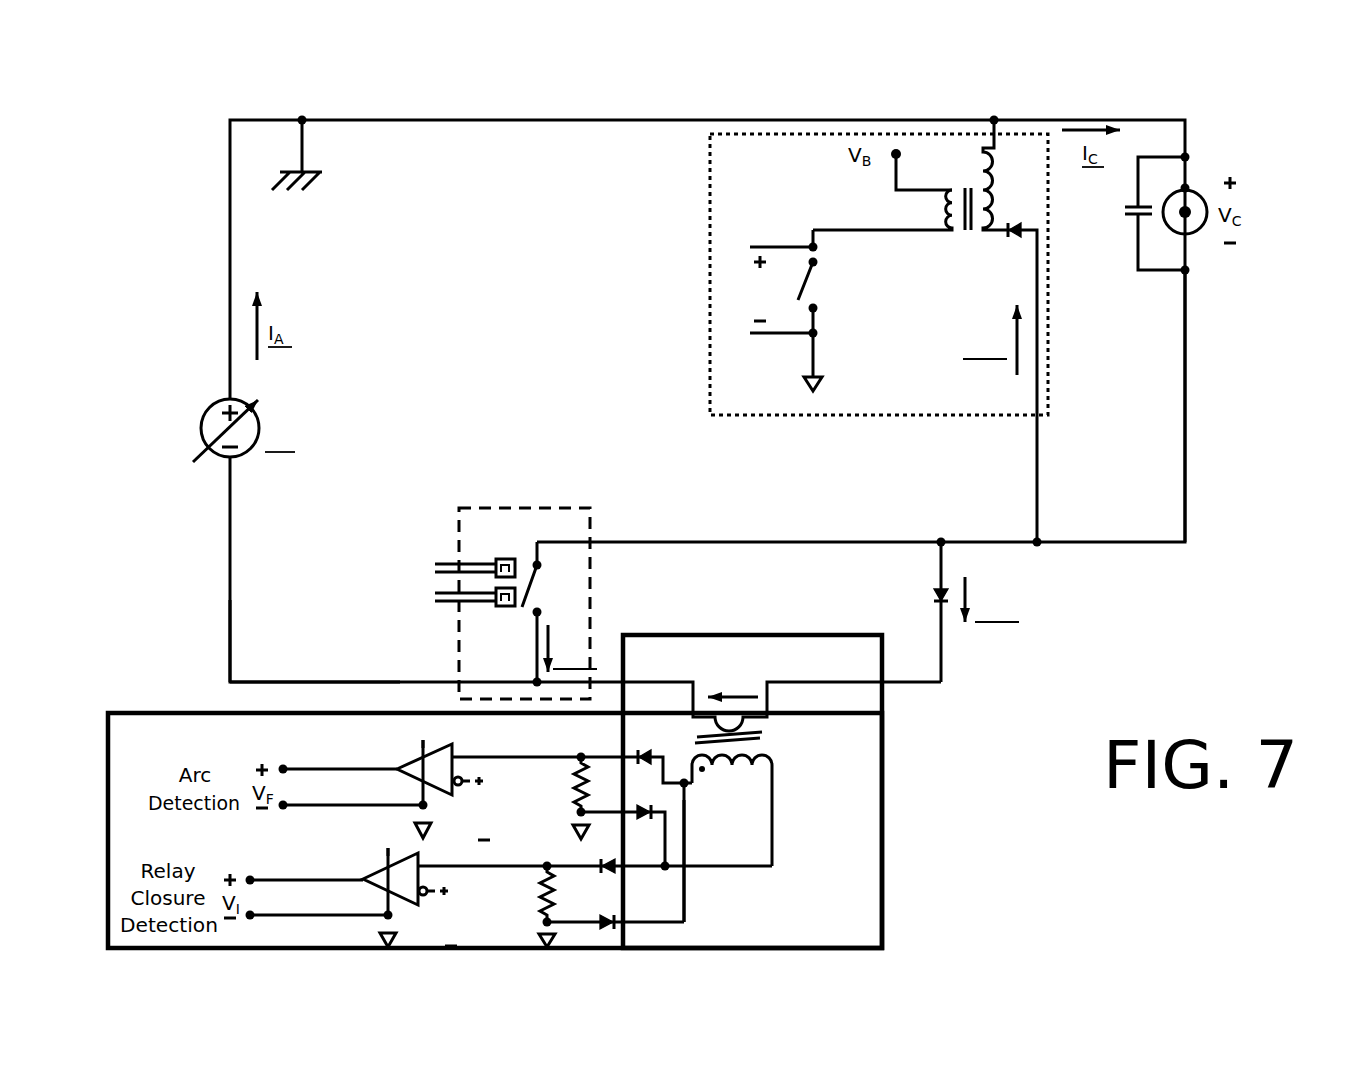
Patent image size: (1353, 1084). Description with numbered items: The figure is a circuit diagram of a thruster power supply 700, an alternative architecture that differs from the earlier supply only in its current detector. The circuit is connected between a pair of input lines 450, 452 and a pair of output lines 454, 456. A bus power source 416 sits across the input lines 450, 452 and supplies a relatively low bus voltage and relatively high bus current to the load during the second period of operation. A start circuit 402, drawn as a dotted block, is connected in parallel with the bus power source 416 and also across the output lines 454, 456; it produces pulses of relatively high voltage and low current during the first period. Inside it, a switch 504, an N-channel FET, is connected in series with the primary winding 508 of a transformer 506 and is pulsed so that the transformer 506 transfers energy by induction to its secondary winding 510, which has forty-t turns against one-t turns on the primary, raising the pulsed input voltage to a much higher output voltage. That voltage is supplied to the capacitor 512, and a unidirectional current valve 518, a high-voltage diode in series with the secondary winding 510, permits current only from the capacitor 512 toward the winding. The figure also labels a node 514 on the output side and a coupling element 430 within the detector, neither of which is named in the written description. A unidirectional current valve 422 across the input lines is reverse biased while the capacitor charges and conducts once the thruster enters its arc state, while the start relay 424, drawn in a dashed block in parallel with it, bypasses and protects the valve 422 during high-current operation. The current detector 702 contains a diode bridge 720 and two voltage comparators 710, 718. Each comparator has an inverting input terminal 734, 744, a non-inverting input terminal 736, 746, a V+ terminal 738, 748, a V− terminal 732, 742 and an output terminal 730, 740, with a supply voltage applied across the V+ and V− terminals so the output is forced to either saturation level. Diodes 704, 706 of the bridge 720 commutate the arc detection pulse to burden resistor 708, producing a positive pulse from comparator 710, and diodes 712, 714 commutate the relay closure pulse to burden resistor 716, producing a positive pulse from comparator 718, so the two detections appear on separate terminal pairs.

The thruster power supply 700 is at (338, 85).
The input line 450 is at (255, 108).
The input line 452 is at (307, 654).
The bus power source 416 is at (274, 486).
The output line 454 is at (1255, 114).
The output line 456 is at (1193, 298).
The capacitor 512 is at (1117, 221).
The node 514 is at (1232, 273).
The start circuit 402 is at (688, 213).
The switch 504 is at (862, 296).
The transformer 506 is at (987, 258).
The primary winding 508 is at (947, 224).
The secondary winding 510 is at (1034, 196).
The unidirectional current valve 518 is at (1003, 245).
The start relay 424 is at (532, 533).
The unidirectional current valve 422 is at (929, 611).
The current detector 702 is at (859, 665).
The current transformer 430 is at (820, 736).
The voltage comparator 710 is at (449, 780).
The output terminal 730 is at (338, 758).
The V− terminal 732 is at (351, 795).
The non-inverting input terminal 736 is at (495, 752).
The inverting input terminal 734 is at (534, 784).
The V+ terminal 738 is at (409, 750).
The voltage comparator 718 is at (415, 890).
The output terminal 740 is at (305, 869).
The V− terminal 742 is at (317, 904).
The non-inverting input terminal 746 is at (464, 861).
The inverting input terminal 744 is at (497, 891).
The V+ terminal 748 is at (379, 856).
The burden resistor 708 is at (567, 801).
The diode 704 is at (659, 750).
The diode 706 is at (662, 805).
The diode 712 is at (627, 860).
The diode 714 is at (627, 915).
The burden resistor 716 is at (537, 920).
The diode bridge 720 is at (704, 886).